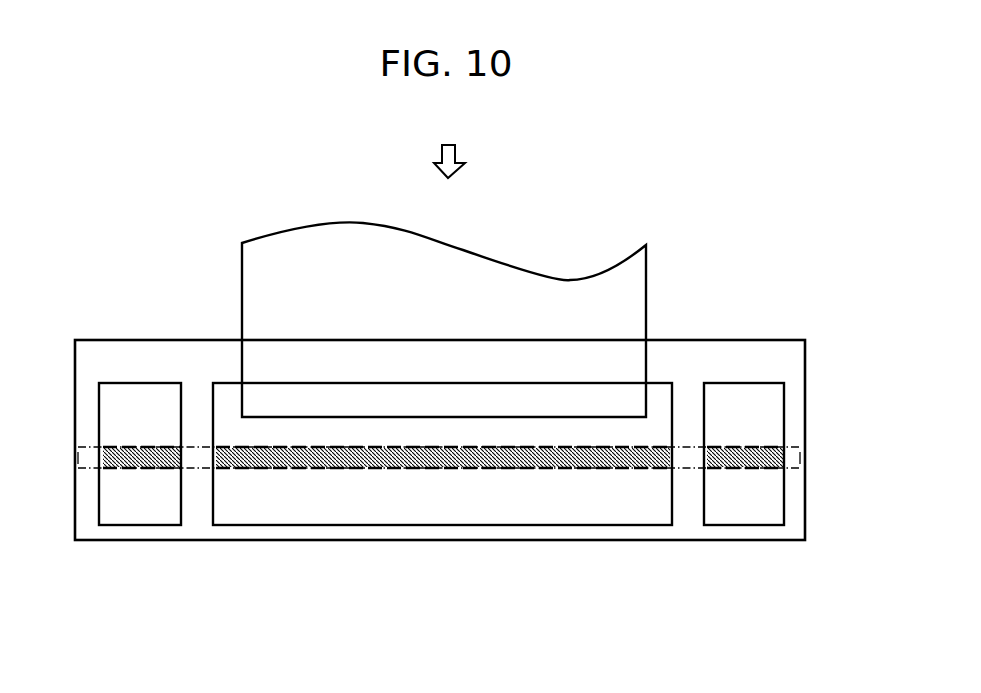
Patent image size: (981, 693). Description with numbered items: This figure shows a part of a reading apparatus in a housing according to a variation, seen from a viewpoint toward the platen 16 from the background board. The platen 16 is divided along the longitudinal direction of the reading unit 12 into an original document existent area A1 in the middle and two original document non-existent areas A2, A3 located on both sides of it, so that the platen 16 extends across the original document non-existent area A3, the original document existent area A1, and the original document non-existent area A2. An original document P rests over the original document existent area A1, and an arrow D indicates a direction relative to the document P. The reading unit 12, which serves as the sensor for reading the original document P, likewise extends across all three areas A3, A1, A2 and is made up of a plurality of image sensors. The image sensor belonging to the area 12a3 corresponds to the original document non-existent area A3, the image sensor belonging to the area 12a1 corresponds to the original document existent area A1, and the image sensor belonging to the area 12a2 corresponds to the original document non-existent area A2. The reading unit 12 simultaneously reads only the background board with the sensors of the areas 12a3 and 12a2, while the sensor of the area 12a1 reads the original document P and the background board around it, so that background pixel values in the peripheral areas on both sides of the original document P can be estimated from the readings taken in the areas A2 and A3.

The platen 16 is at (738, 345).
The original document P is at (387, 233).
The pressing direction D is at (449, 144).
The original document existent area A1 is at (240, 477).
The original document non-existent area A2 is at (780, 433).
The original document non-existent area A3 is at (152, 477).
The reading unit 12 is at (440, 462).
The area of the reading unit corresponding to the original document existent area 12a1 is at (442, 463).
The area of the reading unit corresponding to the original document non-existent are 12a2 is at (760, 470).
The area of the reading unit corresponding to the original document non-existent are 12a3 is at (140, 457).